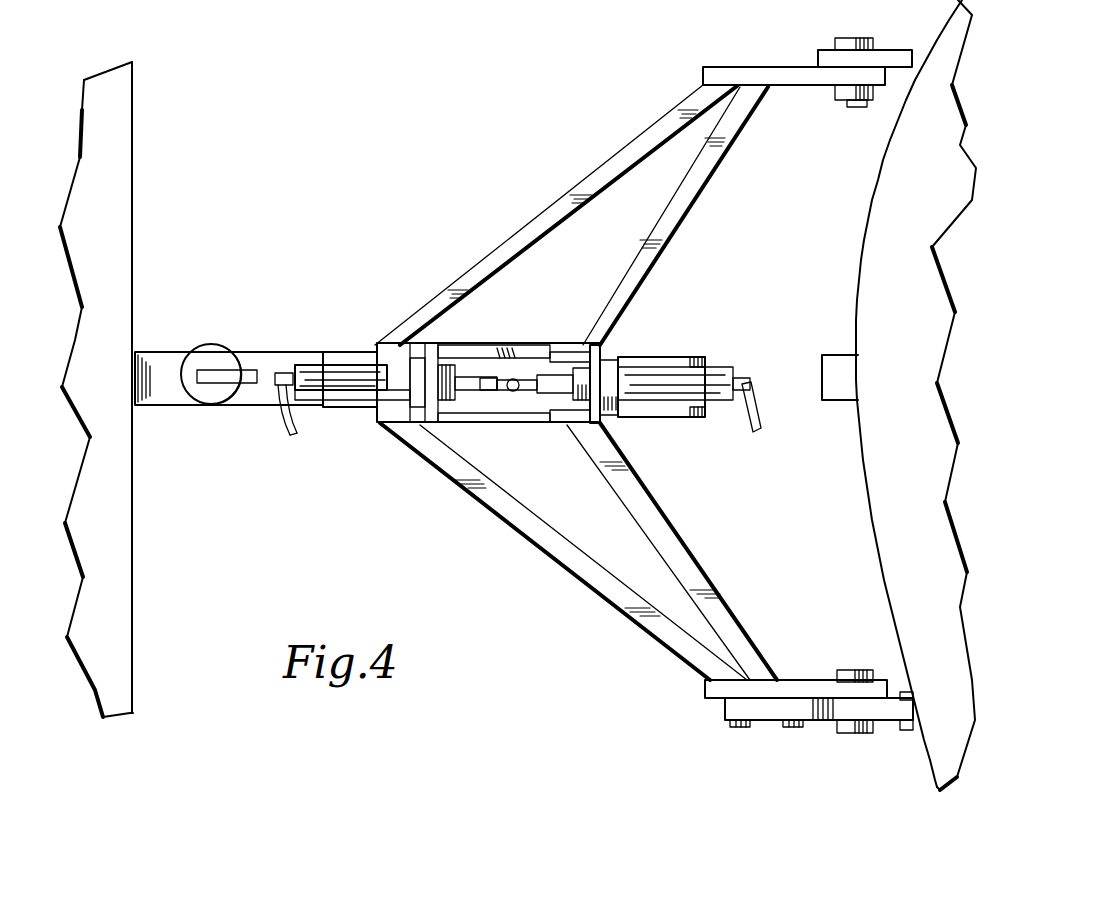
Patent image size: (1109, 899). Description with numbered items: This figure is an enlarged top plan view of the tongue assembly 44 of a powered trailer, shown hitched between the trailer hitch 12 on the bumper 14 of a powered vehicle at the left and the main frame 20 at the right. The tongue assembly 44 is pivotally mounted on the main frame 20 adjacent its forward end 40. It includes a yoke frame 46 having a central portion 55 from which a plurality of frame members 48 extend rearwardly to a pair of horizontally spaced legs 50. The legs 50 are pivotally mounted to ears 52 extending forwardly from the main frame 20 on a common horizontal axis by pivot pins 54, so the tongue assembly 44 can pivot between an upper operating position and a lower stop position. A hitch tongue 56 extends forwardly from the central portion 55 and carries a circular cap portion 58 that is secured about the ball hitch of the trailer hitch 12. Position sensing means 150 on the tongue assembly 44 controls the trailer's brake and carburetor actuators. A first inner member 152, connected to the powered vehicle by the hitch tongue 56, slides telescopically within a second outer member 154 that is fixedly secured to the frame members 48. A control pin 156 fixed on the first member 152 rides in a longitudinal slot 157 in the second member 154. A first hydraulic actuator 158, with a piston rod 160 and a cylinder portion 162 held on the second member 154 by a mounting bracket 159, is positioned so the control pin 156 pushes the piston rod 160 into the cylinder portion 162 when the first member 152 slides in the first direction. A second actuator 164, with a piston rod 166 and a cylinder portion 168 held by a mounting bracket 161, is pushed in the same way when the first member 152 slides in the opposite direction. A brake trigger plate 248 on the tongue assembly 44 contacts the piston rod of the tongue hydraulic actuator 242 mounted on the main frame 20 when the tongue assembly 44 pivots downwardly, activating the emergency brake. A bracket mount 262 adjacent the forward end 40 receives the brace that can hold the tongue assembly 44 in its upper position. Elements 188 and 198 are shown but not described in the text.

The trailer hitch 12 is at (150, 400).
The bumper 14 is at (127, 303).
The main frame 20 is at (913, 421).
The forward end 40 is at (876, 235).
The tongue assembly 44 is at (568, 148).
The yoke frame 46 is at (491, 250).
The frame members 48 is at (680, 185).
The legs 50 is at (752, 75).
The ears 52 is at (887, 57).
The pivot pins 54 is at (862, 107).
The central portion 55 is at (497, 426).
The hitch tongue 56 is at (253, 357).
The circular cap portion 58 is at (198, 356).
The position sensing means 150 is at (452, 328).
The first inner member 152 is at (345, 347).
The second outer member 154 is at (503, 345).
The control pin 156 is at (512, 391).
The longitudinal slot 157 is at (536, 378).
The first hydraulic actuator 158 is at (388, 383).
The mounting bracket 159 is at (442, 335).
The piston rod 160 is at (465, 380).
The mounting bracket 161 is at (584, 348).
The cylinder portion 162 is at (311, 405).
The second actuator 164 is at (642, 408).
The piston rod 166 is at (561, 384).
The cylinder portion 168 is at (718, 402).
The cable 188 is at (277, 430).
The lever 198 is at (758, 406).
The tongue hydraulic actuator 242 is at (907, 732).
The brake trigger plate 248 is at (760, 713).
The bracket mount 262 is at (826, 356).